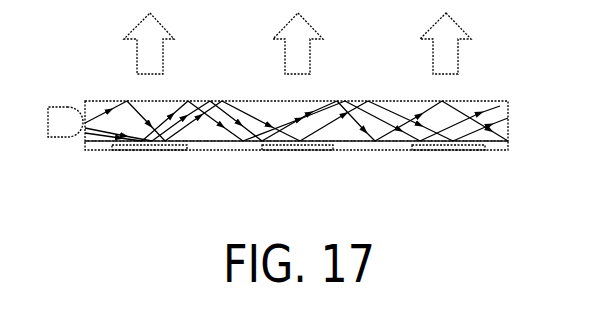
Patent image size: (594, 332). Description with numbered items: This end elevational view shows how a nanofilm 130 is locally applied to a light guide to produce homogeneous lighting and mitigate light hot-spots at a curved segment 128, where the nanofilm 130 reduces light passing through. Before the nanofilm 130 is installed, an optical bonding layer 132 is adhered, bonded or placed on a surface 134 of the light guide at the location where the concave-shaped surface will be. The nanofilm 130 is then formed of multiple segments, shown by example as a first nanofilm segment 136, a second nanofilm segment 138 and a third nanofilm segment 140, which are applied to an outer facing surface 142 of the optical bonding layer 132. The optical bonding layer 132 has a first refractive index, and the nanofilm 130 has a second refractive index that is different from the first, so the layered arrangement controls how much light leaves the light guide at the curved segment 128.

The curved segment 128 is at (506, 127).
The nanofilm 130 is at (307, 191).
The optical bonding layer 132 is at (507, 146).
The surface of the light guide 134 is at (207, 104).
The first nanofilm segment 136 is at (147, 151).
The second nanofilm segment 138 is at (298, 152).
The third nanofilm segment 140 is at (447, 152).
The outer facing surface 142 is at (96, 157).